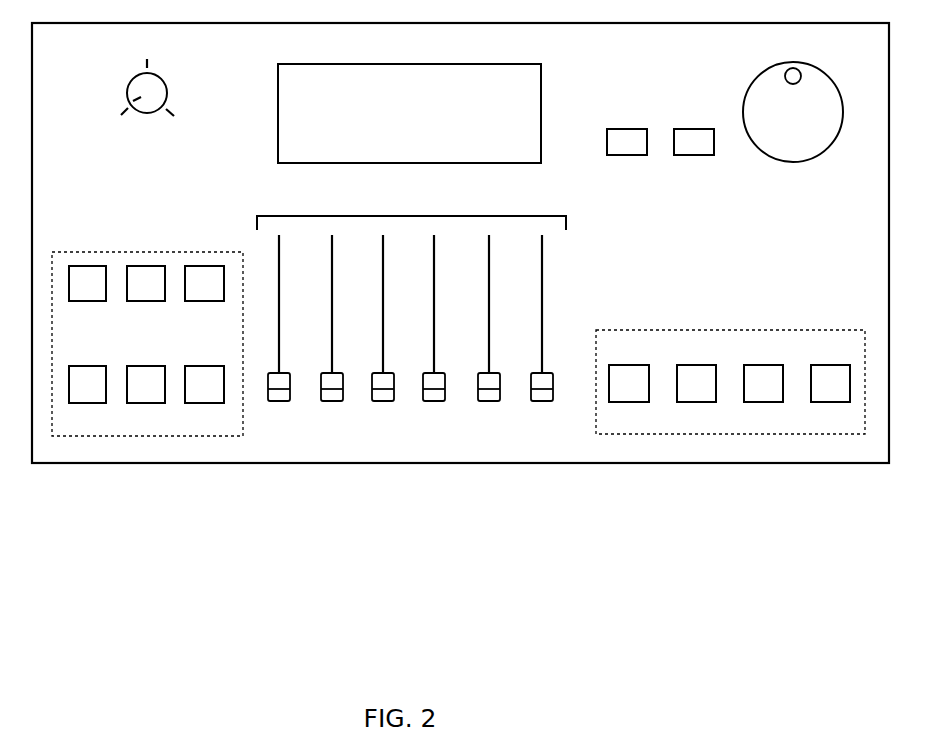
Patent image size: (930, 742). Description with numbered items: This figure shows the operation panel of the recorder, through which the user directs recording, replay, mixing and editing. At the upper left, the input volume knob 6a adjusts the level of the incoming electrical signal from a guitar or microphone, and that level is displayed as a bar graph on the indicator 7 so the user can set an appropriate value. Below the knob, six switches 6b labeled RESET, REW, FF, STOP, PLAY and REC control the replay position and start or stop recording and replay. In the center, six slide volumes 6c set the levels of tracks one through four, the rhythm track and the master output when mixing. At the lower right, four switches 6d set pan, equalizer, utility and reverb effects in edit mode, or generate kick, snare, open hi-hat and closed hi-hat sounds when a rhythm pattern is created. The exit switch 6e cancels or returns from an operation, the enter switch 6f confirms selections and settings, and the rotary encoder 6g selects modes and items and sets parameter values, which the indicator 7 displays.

The input volume knob 6a is at (136, 88).
The six switches 6b is at (165, 250).
The slide volumes 6c is at (262, 442).
The four switches 6d is at (694, 436).
The exit switch 6e is at (627, 137).
The enter switch 6f is at (692, 137).
The rotary encoder 6g is at (770, 80).
The indicator 7 is at (529, 96).